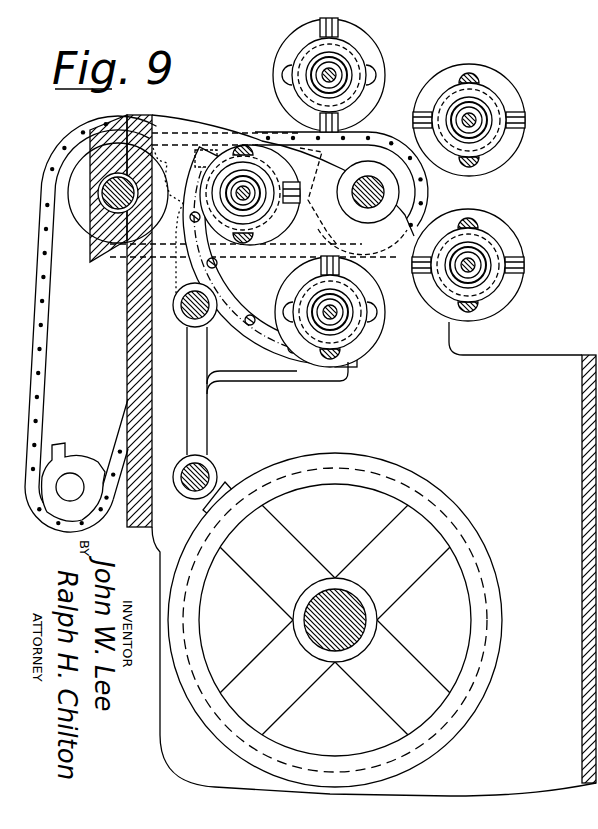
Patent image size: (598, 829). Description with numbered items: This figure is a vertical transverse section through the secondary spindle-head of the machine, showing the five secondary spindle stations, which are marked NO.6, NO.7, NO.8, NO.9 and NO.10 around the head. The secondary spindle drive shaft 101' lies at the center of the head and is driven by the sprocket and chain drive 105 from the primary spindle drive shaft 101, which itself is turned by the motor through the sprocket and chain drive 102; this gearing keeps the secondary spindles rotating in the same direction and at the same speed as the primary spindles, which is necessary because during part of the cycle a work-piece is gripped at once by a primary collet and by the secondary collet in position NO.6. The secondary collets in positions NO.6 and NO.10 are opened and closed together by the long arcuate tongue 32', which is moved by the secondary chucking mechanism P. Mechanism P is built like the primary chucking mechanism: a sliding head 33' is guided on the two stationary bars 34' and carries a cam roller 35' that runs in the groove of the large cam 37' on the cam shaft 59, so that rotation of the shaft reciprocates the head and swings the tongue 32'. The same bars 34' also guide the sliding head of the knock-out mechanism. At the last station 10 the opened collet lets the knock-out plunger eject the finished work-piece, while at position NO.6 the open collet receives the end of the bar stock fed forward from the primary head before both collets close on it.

The position 10 is at (137, 328).
The primary spindle drive shaft 101 is at (100, 180).
The secondary spindle drive shaft 101' is at (403, 208).
The sprocket and chain drive 102 is at (47, 365).
The sprocket and chain drive 105 is at (270, 131).
The position No. 6 NO.6 is at (250, 166).
The gear unit No. 7 NO.7 is at (348, 75).
The gear unit No. 8 NO.8 is at (483, 118).
The gear unit No. 9 NO.9 is at (483, 265).
The position No. 10 NO.10 is at (349, 315).
The long arcuate tongue 32' is at (270, 257).
The link arm 33' is at (184, 391).
The stationary bars 34' is at (187, 391).
The friction pad 35' is at (229, 486).
The hand wheel 37' is at (335, 620).
The cam shaft 59 is at (350, 628).
The secondary spindles' chucking mechanisms P is at (238, 357).